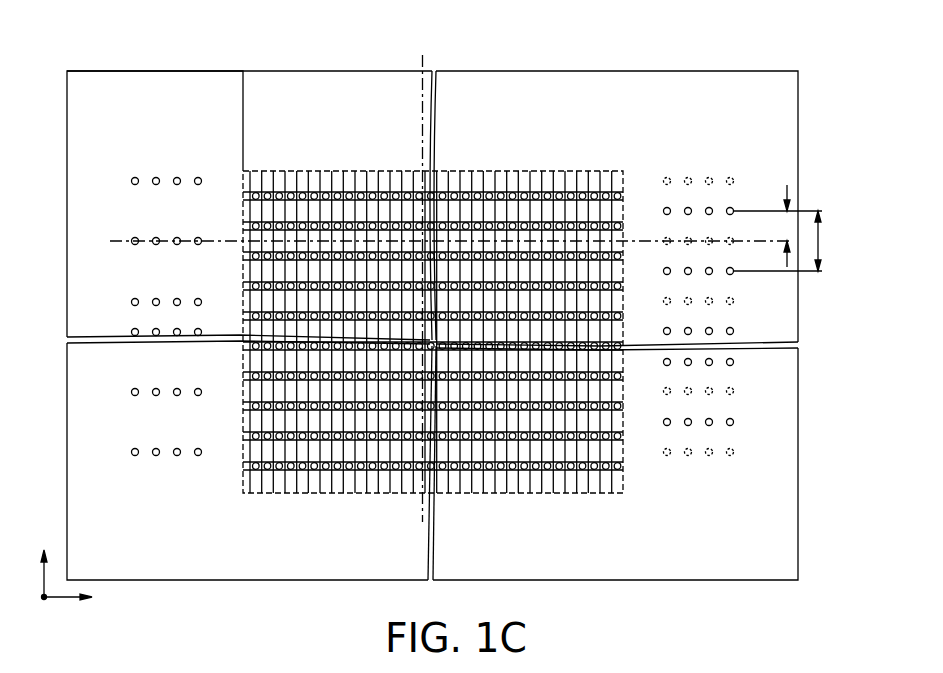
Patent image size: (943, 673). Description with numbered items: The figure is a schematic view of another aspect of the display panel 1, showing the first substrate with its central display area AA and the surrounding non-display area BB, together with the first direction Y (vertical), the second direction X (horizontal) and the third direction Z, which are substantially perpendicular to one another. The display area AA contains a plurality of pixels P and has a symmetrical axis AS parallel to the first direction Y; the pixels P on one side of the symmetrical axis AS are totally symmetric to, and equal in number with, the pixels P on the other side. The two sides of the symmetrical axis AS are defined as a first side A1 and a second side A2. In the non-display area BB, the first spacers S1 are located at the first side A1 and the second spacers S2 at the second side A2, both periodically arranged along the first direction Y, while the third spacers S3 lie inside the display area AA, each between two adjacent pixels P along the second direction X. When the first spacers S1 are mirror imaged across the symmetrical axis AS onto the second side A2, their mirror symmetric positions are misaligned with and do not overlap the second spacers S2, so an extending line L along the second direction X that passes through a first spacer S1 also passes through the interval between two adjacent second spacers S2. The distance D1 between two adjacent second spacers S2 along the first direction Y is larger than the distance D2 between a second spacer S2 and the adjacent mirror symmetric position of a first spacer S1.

The display panel 1 is at (727, 71).
The non-display area BB is at (145, 100).
The first side A1 is at (254, 71).
The second side A2 is at (576, 70).
The symmetrical axis AS is at (423, 275).
The display area AA is at (460, 299).
The pixels P is at (483, 176).
The first spacers S1 is at (178, 178).
The second spacers S2 is at (710, 208).
The third spacers S3 is at (617, 437).
The distance between two adjacent second spacers D1 is at (835, 241).
The distance between second spacer and adjacent mirror symmetric position D2 is at (777, 228).
The extending line L is at (440, 242).
The second direction X is at (77, 598).
The first direction Y is at (42, 557).
The third direction Z is at (44, 619).